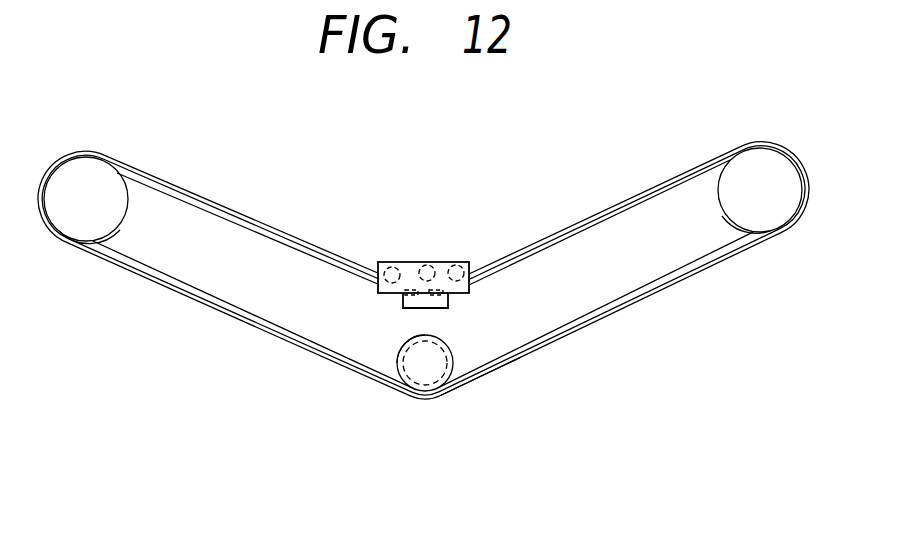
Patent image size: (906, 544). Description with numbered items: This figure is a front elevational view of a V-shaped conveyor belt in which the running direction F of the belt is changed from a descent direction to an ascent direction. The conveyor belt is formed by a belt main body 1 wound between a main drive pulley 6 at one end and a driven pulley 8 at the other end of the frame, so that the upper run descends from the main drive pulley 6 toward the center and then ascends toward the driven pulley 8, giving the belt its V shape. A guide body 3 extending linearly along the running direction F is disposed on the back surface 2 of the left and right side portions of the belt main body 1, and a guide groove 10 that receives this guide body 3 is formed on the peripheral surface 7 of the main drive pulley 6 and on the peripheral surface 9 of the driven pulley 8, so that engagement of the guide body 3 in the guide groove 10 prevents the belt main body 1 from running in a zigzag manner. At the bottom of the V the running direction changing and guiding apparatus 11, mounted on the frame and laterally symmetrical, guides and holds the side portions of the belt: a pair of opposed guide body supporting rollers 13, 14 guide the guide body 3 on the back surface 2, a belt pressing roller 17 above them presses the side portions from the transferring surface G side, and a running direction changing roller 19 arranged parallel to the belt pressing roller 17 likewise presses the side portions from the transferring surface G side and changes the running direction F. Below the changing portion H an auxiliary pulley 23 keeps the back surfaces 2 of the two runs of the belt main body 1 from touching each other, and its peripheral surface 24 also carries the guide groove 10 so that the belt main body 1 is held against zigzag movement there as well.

The belt main body 1 is at (248, 219).
The back surface 2 is at (290, 256).
The guide body 3 is at (264, 237).
The main drive pulley 6 is at (70, 220).
The peripheral surface 7 is at (122, 229).
The driven pulley 8 is at (773, 203).
The peripheral surface 9 is at (725, 218).
The guide groove 10 is at (477, 370).
The running direction changing and guiding apparatus 11 is at (430, 210).
The guide body supporting roller 13 is at (528, 353).
The guide body supporting roller 14 is at (450, 302).
The belt pressing roller 17 is at (432, 265).
The running direction changing roller 19 is at (392, 263).
The auxiliary pulley 23 is at (422, 373).
The peripheral surface 24 is at (400, 351).
The running direction F is at (204, 158).
The transferring surface G is at (582, 212).
The changing portion H is at (376, 318).